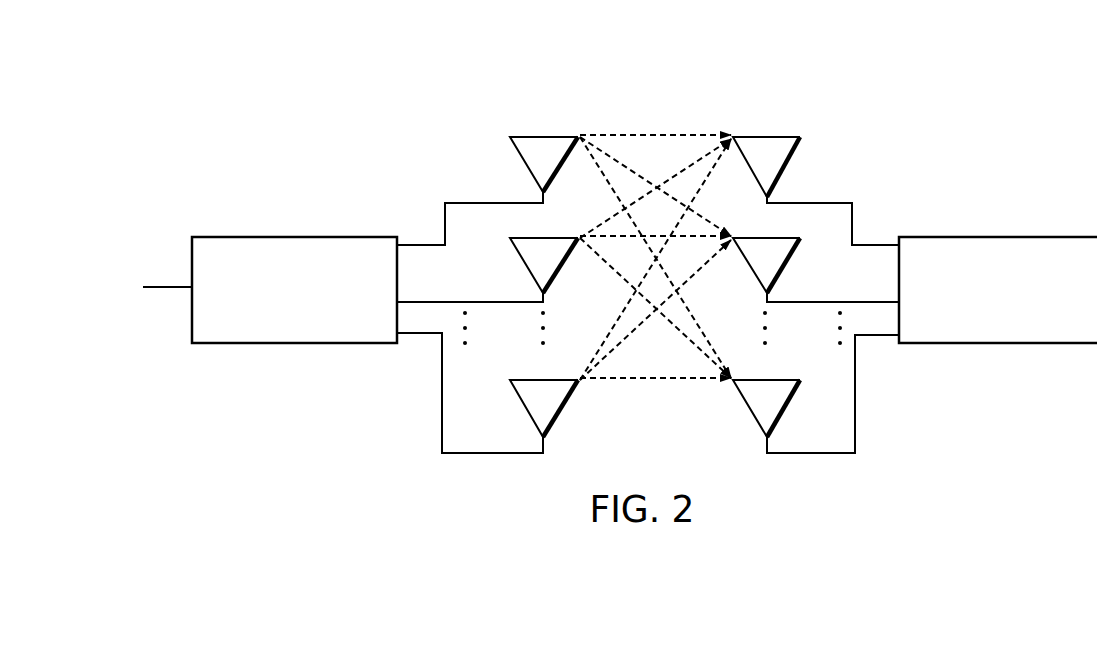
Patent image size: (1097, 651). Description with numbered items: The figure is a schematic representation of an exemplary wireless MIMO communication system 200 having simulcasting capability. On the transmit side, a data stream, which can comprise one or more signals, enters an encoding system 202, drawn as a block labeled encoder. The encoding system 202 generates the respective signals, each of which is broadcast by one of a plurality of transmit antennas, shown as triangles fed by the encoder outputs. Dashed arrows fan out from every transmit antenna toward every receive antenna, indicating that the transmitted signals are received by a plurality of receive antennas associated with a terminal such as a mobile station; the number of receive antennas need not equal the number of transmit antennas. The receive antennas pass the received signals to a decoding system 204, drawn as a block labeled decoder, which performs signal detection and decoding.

The MIMO system 200 is at (655, 88).
The encoding system 202 is at (271, 237).
The decoding system 204 is at (994, 237).